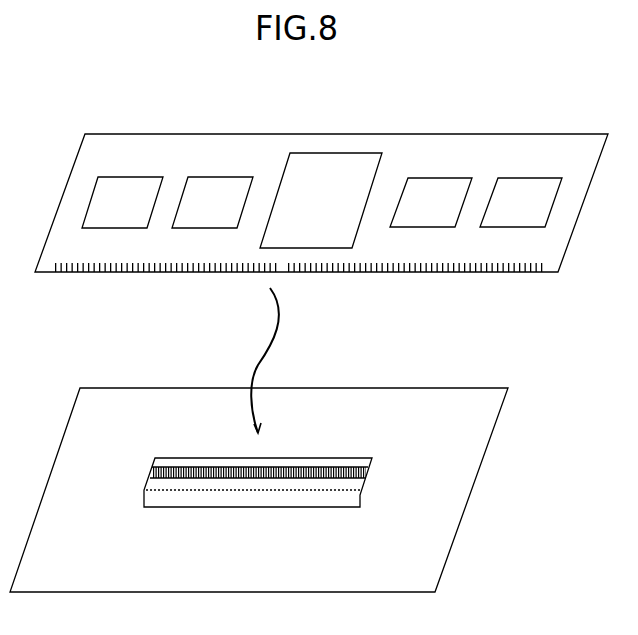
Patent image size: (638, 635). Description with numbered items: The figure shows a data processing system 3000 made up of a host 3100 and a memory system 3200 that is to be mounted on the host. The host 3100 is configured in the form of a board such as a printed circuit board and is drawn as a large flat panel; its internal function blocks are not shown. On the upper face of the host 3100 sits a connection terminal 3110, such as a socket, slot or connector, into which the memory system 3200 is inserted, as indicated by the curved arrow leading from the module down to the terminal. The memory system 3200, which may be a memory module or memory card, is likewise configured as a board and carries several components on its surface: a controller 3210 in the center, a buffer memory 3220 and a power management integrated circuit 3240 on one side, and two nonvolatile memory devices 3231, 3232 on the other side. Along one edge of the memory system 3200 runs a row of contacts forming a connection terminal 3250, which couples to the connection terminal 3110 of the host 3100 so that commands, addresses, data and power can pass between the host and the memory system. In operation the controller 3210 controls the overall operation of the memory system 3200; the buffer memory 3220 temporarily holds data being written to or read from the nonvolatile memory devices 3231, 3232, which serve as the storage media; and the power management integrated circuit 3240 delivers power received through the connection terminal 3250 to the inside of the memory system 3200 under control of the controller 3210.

The data processing system 3000 is at (180, 102).
The host 3100 is at (259, 490).
The connection terminal 3110 is at (389, 450).
The memory system 3200 is at (321, 224).
The controller 3210 is at (321, 200).
The buffer memory 3220 is at (212, 202).
The nonvolatile memory device 3231 is at (431, 202).
The nonvolatile memory device 3232 is at (521, 202).
The power management integrated circuit 3240 is at (122, 202).
The connection terminal 3250 is at (70, 272).